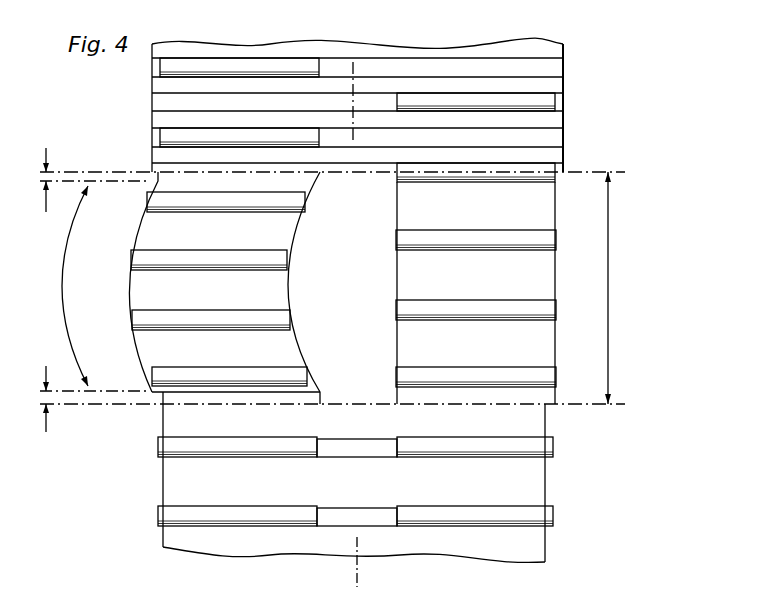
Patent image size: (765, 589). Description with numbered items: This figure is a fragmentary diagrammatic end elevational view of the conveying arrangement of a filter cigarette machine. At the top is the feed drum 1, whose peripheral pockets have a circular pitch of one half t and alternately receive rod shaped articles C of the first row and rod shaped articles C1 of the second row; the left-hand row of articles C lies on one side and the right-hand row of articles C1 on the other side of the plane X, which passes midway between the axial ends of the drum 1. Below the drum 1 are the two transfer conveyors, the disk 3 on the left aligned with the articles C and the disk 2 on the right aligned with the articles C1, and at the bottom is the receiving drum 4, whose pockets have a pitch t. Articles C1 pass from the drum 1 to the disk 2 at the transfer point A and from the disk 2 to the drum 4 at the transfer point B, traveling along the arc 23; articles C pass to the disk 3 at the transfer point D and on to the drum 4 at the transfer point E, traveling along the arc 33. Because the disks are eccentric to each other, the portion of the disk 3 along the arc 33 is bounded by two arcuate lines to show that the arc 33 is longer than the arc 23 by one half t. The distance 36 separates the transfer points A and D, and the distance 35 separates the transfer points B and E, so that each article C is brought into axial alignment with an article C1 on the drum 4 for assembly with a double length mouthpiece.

The drum 1 is at (357, 54).
The disk 2 is at (476, 292).
The disk 3 is at (224, 300).
The drum 4 is at (351, 491).
The arc 23 is at (610, 291).
The arc 33 is at (56, 294).
The distance 35 is at (46, 398).
The distance 36 is at (52, 178).
The rod shaped articles C is at (200, 72).
The rod shaped articles C1 is at (522, 100).
The transfer point A is at (599, 169).
The transfer point B is at (590, 407).
The transfer point D is at (112, 186).
The transfer point E is at (134, 389).
The plane X is at (361, 581).